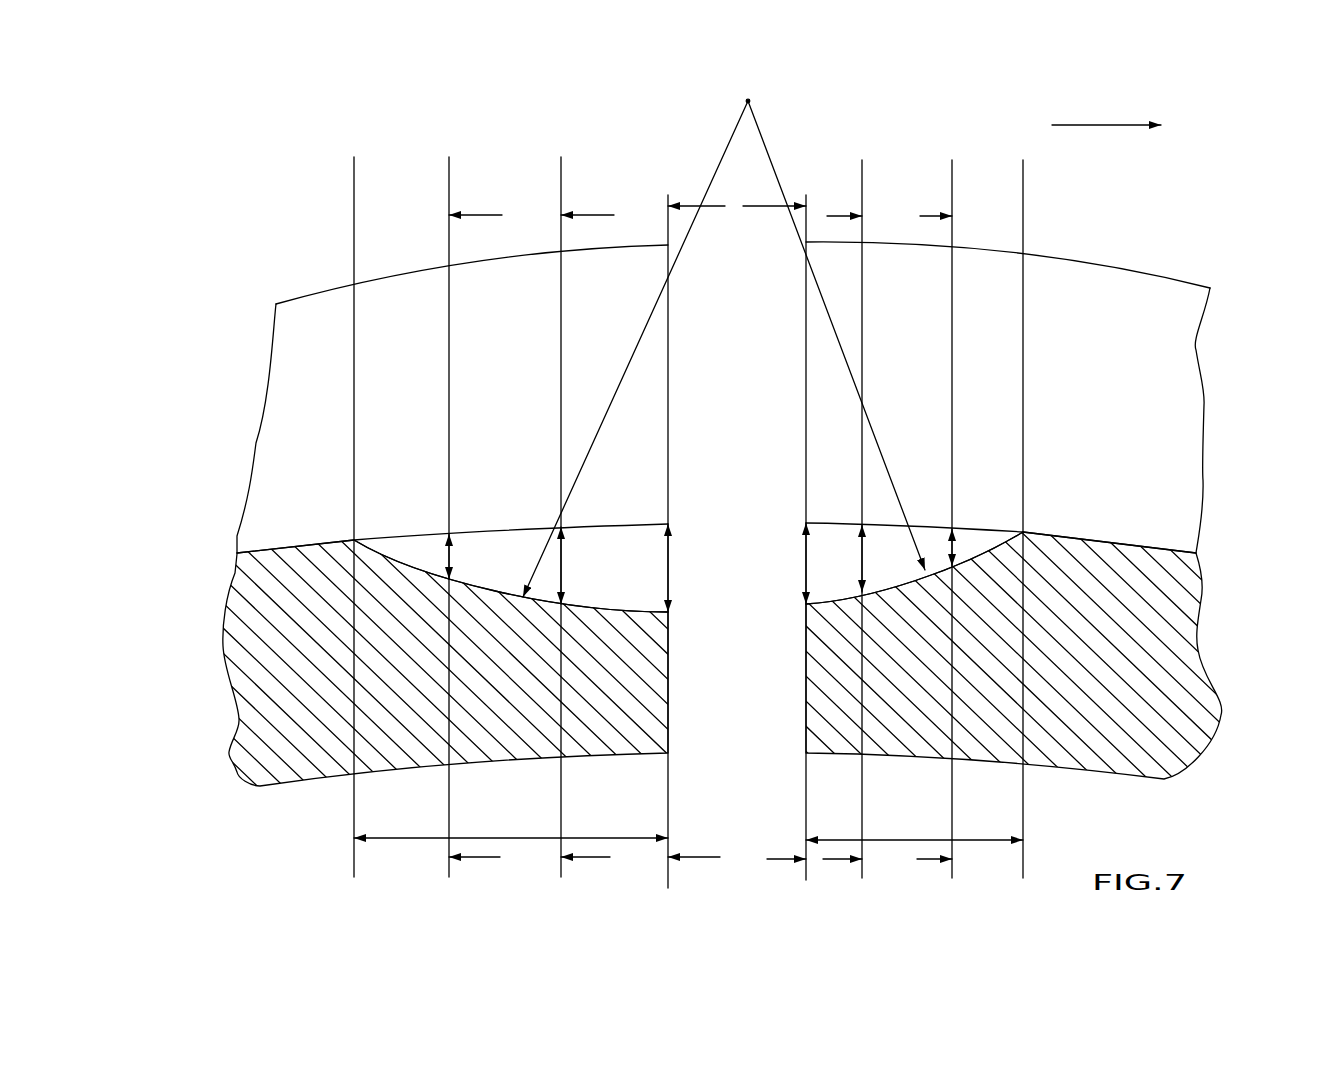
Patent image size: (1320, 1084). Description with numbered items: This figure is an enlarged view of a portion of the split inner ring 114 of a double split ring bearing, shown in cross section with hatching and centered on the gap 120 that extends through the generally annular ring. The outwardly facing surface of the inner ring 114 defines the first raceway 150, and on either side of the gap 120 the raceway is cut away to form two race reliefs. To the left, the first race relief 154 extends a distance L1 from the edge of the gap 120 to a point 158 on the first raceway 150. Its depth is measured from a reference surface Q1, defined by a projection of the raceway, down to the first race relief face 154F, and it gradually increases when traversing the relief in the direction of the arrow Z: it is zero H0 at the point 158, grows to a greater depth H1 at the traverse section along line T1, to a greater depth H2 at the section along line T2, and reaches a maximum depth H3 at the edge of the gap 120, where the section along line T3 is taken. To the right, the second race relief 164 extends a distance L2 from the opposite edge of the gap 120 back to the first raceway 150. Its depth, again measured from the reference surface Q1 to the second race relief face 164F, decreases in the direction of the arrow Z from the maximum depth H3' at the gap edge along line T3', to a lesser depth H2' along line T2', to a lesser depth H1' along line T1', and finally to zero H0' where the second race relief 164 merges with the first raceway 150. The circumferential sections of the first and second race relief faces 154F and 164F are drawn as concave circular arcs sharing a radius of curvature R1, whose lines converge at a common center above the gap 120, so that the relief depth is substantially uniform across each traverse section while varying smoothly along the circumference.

The inner ring 114 is at (245, 735).
The gap 120 is at (723, 432).
The first raceway 150 is at (304, 402).
The first race relief 154 is at (597, 548).
The first race relief face 154F is at (493, 593).
The point 158 is at (356, 496).
The second race relief 164 is at (825, 547).
The second race relief face 164F is at (907, 578).
The radius of curvature R1 is at (706, 192).
The arrow Z is at (1108, 125).
The reference surface Q1 is at (507, 526).
The distance L1 is at (500, 838).
The distance L2 is at (900, 840).
The line T1- T1 is at (480, 528).
The line T2- T2 is at (591, 528).
The line T3- T3 is at (699, 554).
The line T1'- T1' is at (928, 531).
The line T2'- T2' is at (836, 531).
The line T3'- T3' is at (771, 527).
The zero depth H0 is at (394, 512).
The depth H1 is at (427, 556).
The depth H2 is at (585, 565).
The maximum depth H3 is at (694, 568).
The zero depth H0' is at (995, 510).
The depth H1' is at (932, 526).
The depth H2' is at (838, 558).
The maximum depth H3' is at (780, 563).